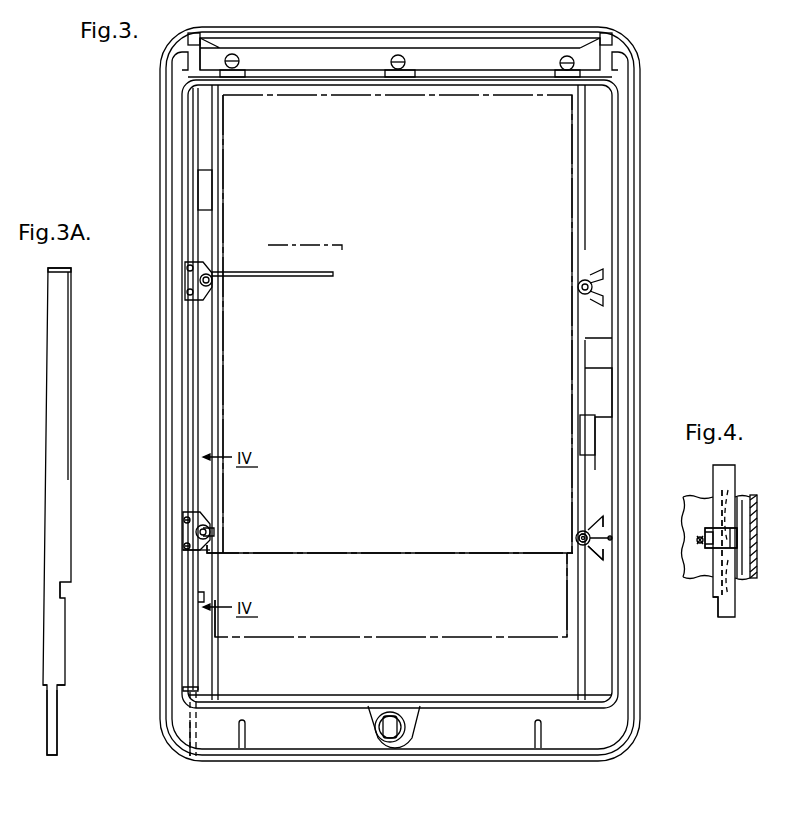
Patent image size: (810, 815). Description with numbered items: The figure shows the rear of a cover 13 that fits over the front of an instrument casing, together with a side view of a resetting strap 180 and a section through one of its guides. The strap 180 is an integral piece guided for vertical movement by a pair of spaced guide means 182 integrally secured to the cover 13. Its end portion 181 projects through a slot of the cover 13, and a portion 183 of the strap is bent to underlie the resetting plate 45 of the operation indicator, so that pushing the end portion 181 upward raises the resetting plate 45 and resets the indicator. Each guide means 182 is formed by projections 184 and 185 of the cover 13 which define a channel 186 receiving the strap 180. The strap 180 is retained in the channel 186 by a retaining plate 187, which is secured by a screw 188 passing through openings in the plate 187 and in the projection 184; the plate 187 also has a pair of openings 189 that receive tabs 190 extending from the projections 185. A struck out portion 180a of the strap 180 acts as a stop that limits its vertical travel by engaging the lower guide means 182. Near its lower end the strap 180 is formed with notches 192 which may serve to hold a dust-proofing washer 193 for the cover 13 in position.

In FIG. 3, the cover 13 is at (638, 331).
In FIG. 3, the resetting plate 45 is at (335, 246).
In FIG. 3, the resetting strap 180 is at (194, 422).
In FIG. 3A, the resetting strap 180 is at (69, 410).
In FIG. 4, the resetting strap 180 is at (718, 618).
In FIG. 3, the struck out portion 180a is at (204, 597).
In FIG. 3A, the struck out portion 180a is at (62, 592).
In FIG. 4, the struck out portion 180a is at (713, 608).
In FIG. 3, the end portion 181 is at (196, 721).
In FIG. 3A, the end portion 181 is at (58, 735).
In FIG. 3, the guide means 182 is at (205, 268).
In FIG. 4, the guide means 182 is at (705, 497).
In FIG. 3, the bent portion 183 is at (320, 277).
In FIG. 3A, the bent portion 183 is at (70, 270).
In FIG. 3, the projection 184 is at (577, 540).
In FIG. 4, the projection 184 is at (715, 576).
In FIG. 3, the projection 185 is at (604, 520).
In FIG. 4, the projection 185 is at (735, 500).
In FIG. 3, the channel 186 is at (592, 552).
In FIG. 3, the retaining plate 187 is at (206, 544).
In FIG. 4, the retaining plate 187 is at (705, 528).
In FIG. 3, the screw 188 is at (210, 532).
In FIG. 4, the screw 188 is at (705, 548).
In FIG. 3, the openings 189 is at (185, 545).
In FIG. 3, the tabs 190 is at (614, 538).
In FIG. 4, the tabs 190 is at (696, 540).
In FIG. 3A, the notches 192 is at (43, 690).
In FIG. 3, the dust-proofing washer 193 is at (196, 688).